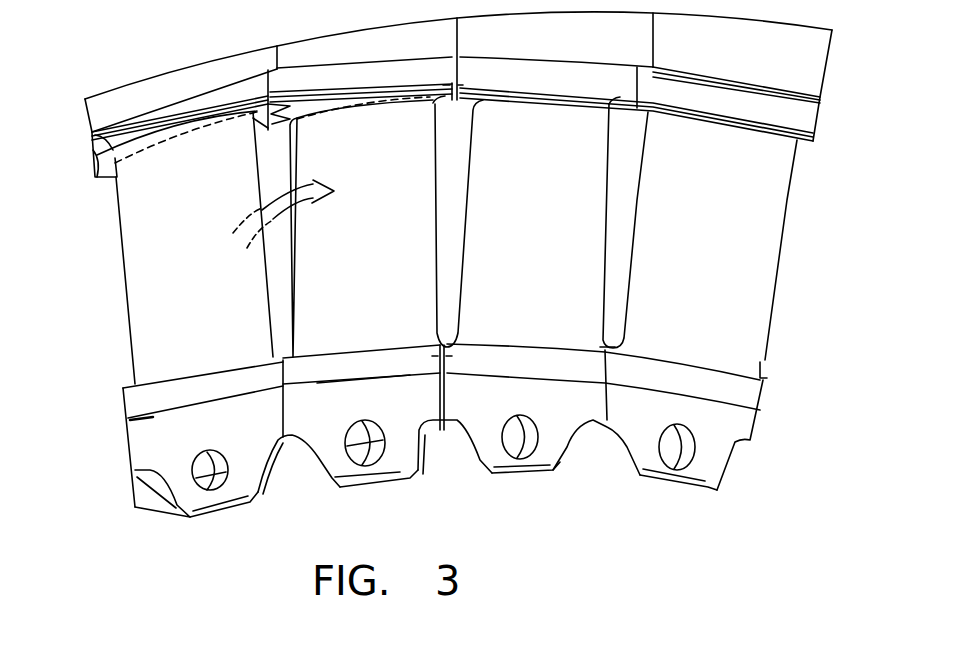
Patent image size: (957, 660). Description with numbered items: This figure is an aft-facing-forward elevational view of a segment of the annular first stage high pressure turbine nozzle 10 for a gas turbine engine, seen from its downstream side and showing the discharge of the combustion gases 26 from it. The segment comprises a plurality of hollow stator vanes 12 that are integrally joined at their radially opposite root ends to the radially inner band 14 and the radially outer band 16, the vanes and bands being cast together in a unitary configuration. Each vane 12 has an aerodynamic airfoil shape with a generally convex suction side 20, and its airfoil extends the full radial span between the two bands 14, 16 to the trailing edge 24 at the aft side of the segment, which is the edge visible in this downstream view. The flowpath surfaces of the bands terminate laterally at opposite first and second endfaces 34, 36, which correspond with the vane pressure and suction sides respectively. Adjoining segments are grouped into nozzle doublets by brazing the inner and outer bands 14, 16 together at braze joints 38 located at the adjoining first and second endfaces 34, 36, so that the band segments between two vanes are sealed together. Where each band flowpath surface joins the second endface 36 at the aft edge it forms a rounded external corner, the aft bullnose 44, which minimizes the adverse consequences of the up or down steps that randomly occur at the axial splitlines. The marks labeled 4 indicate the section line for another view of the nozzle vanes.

The turbine nozzle 10 is at (449, 265).
The stator vane 12 is at (784, 274).
The inner band 14 is at (760, 401).
The outer band 16 is at (818, 110).
The suction side 20 is at (197, 285).
The trailing edge 24 is at (270, 292).
The combustion gases 26 is at (300, 181).
The first endface 34 is at (289, 116).
The second endface 36 is at (94, 177).
The braze joint 38 is at (272, 86).
The aft bullnose 44 is at (90, 134).
The section line 4- 4 is at (118, 254).